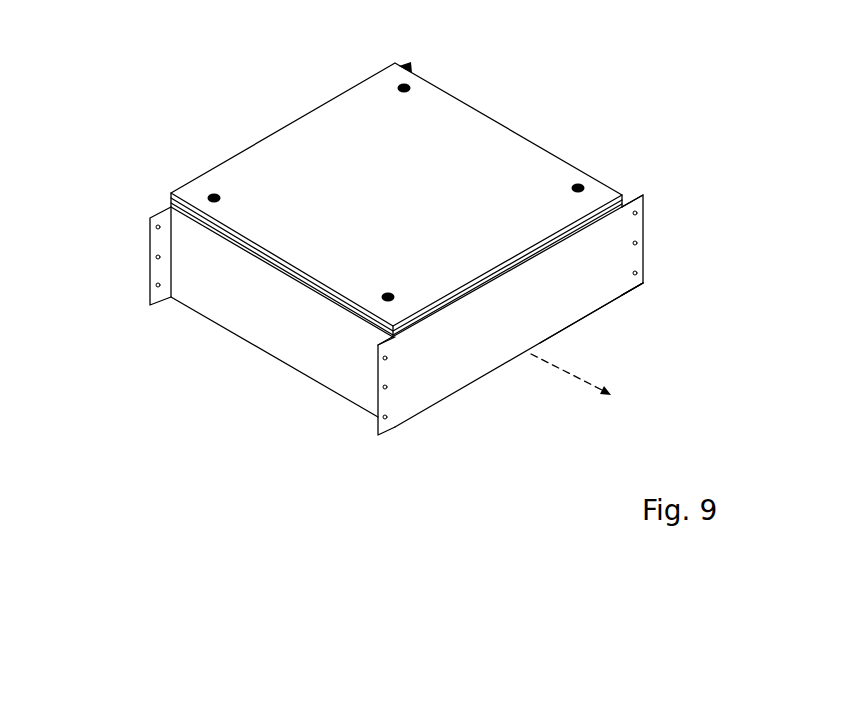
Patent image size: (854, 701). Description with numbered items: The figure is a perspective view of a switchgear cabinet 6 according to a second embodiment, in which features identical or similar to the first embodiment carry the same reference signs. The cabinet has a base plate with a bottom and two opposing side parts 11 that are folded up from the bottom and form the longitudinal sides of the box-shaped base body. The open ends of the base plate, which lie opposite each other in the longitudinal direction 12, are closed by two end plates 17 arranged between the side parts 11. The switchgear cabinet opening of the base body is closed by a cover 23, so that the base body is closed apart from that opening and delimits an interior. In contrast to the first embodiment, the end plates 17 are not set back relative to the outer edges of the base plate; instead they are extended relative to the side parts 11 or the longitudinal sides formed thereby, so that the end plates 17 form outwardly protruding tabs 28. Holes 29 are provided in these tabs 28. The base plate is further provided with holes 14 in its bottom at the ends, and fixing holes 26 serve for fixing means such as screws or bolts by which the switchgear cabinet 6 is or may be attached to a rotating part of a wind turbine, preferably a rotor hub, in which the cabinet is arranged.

The switchgear cabinet 6 is at (262, 99).
The cover 23 is at (488, 137).
The side parts 11 is at (258, 320).
The end plates 17 is at (448, 378).
The holes 14 is at (597, 315).
The fixing holes 26 is at (642, 348).
The longitudinal direction 12 is at (592, 383).
The tabs 28 is at (412, 73).
The holes 29 is at (160, 252).